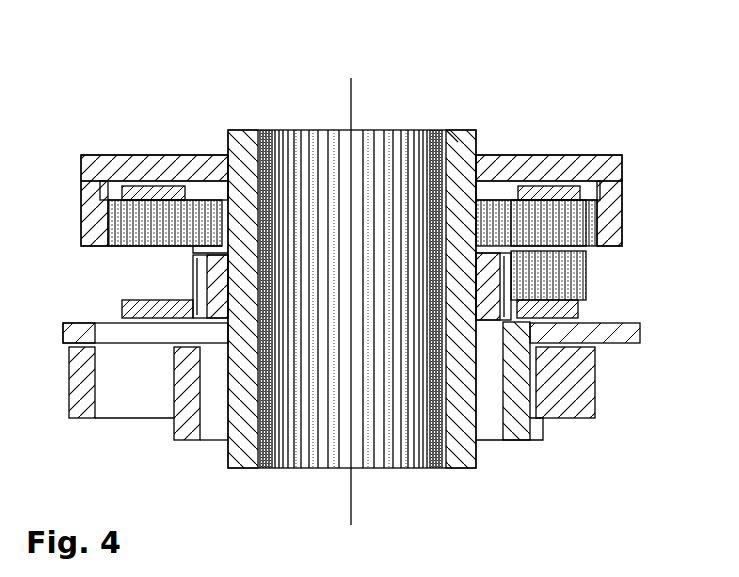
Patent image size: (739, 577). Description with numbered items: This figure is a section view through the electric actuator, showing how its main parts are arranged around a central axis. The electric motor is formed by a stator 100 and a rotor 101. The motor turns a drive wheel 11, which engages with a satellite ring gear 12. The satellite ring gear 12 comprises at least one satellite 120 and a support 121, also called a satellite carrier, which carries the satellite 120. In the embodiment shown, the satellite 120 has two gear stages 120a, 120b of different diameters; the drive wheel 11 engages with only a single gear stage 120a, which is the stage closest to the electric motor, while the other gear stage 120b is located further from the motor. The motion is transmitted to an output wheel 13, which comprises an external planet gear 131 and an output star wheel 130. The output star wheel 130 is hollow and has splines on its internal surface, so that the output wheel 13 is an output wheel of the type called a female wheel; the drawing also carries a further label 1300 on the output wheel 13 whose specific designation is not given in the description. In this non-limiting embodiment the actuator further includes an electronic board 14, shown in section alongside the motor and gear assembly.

The output wheel 13 is at (409, 246).
The rotor core laminations 1300 is at (340, 150).
The output star wheel 130 is at (468, 130).
The external planet gear 131 is at (450, 60).
The satellite 120 is at (351, 95).
The support 121 is at (548, 193).
The gear stage 120b is at (570, 236).
The gear stage 120a is at (560, 276).
The satellite ring gear 12 is at (398, 239).
The drive wheel 11 is at (487, 267).
The electronic board 14 is at (618, 332).
The stator 100 is at (558, 373).
The rotor 101 is at (513, 395).